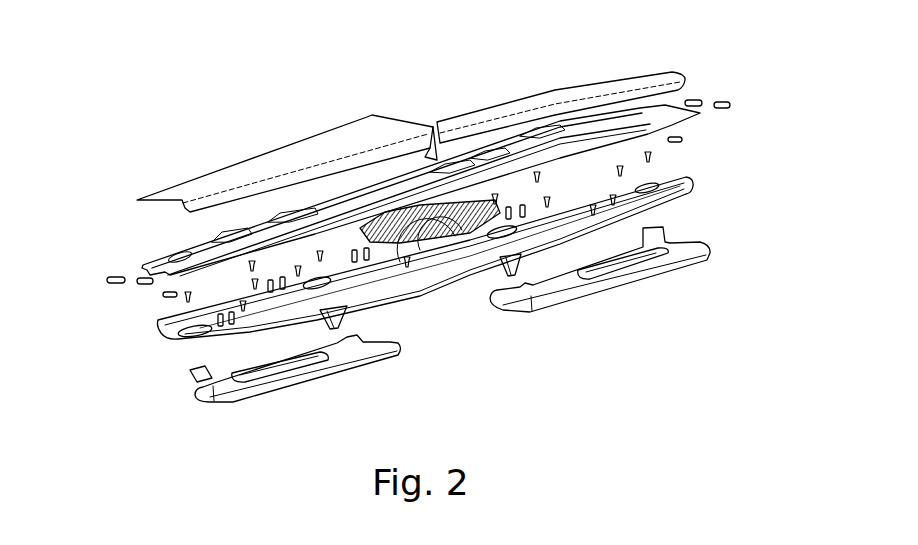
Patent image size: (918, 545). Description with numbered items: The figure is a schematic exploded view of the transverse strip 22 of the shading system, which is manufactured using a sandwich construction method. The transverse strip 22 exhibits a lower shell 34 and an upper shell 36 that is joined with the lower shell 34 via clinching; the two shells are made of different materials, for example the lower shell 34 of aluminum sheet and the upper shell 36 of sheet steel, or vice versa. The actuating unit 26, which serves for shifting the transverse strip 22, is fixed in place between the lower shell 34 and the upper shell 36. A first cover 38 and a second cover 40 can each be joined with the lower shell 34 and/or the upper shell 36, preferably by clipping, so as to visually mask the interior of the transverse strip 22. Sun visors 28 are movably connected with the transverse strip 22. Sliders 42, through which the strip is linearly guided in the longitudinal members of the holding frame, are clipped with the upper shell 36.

The transverse strip 22 is at (212, 136).
The actuating unit 26 is at (428, 245).
The sun visors 28 is at (332, 355).
The lower shell 34 is at (178, 335).
The upper shell 36 is at (336, 220).
The first cover 38 is at (300, 142).
The second cover 40 is at (536, 110).
The sliders 42 is at (692, 98).